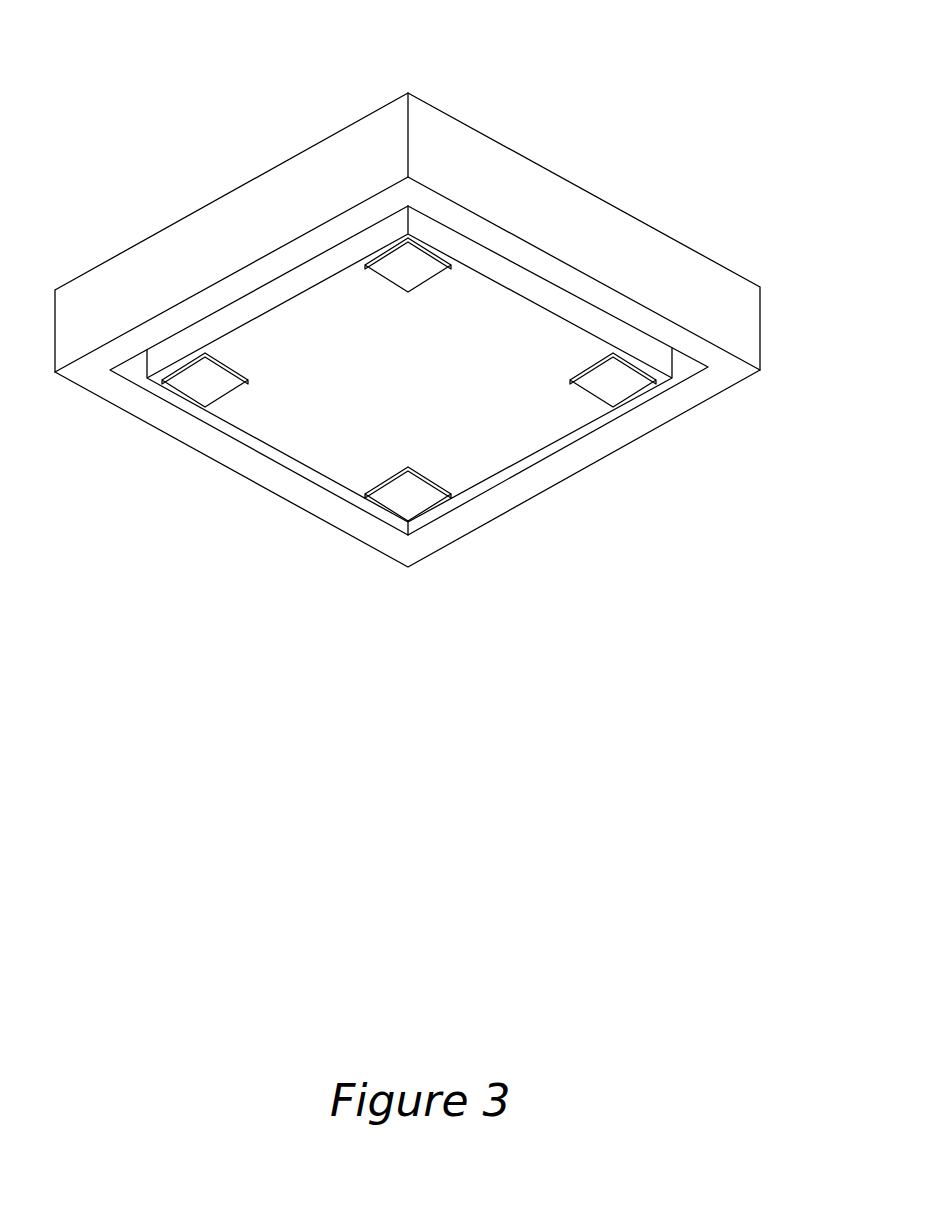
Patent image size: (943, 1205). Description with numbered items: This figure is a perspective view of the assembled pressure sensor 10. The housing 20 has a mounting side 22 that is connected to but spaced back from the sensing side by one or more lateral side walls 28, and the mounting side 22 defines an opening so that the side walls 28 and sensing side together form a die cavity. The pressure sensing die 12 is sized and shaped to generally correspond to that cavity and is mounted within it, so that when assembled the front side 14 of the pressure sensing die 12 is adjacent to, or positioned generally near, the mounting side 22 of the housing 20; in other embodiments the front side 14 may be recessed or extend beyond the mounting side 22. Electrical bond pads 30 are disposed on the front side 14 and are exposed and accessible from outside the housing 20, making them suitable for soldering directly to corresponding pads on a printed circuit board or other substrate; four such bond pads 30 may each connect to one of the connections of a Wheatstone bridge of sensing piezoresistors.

The pressure sensor 10 is at (441, 290).
The pressure sensing die 12 is at (475, 468).
The front side 14 is at (530, 430).
The housing 20 is at (442, 330).
The mounting side 22 is at (733, 373).
The lateral side walls 28 is at (150, 272).
The electrical bond pads 30 is at (405, 262).